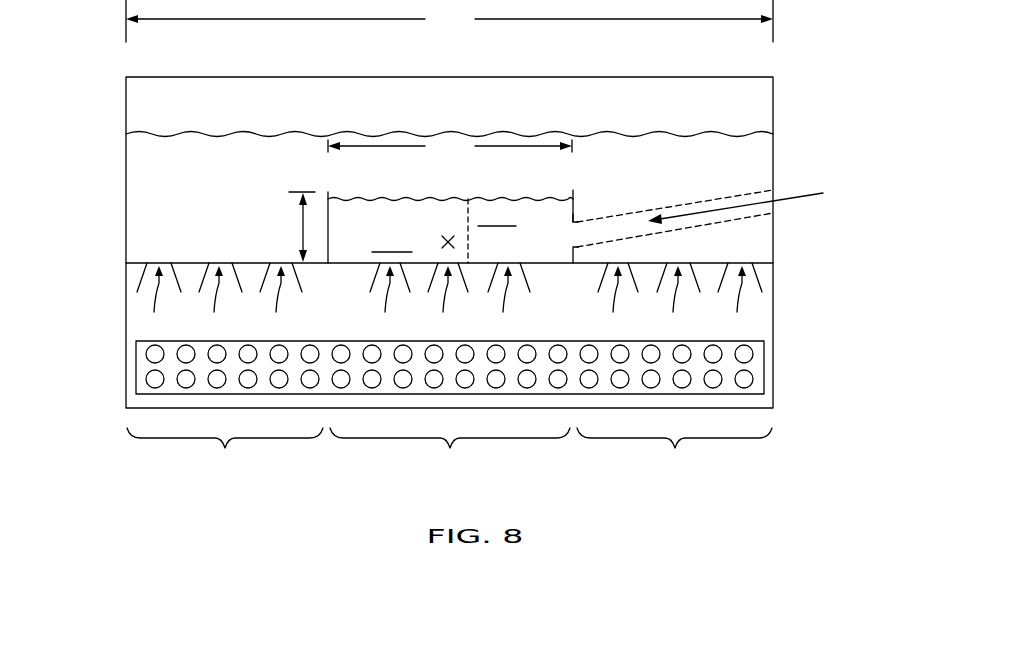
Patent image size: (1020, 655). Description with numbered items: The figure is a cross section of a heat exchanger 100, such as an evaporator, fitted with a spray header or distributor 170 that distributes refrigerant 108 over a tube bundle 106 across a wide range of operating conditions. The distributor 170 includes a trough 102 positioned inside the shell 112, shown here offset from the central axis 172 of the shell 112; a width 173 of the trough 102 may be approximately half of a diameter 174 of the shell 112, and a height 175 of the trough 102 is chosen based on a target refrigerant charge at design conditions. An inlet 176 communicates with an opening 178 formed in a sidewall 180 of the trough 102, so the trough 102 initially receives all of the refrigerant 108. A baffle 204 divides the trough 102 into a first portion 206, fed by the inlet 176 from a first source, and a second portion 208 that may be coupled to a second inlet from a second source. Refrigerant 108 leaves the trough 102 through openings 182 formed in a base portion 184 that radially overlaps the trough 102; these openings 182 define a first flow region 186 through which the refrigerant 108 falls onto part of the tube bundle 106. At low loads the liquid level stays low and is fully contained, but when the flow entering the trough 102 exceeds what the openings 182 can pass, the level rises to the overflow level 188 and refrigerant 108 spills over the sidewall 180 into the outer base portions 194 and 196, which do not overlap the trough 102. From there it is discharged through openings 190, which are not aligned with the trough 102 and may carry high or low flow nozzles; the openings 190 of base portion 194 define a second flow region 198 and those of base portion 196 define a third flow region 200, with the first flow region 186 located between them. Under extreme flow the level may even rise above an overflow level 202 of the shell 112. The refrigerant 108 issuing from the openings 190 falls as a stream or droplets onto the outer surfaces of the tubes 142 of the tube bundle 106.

The heat exchanger 100 is at (419, 237).
The trough 102 is at (576, 209).
The tube bundle 106 is at (419, 375).
The refrigerant 108 is at (823, 193).
The shell 112 is at (123, 192).
The tubes 142 is at (150, 353).
The distributor 170 is at (449, 108).
The central axis 172 is at (452, 238).
The width 173 is at (450, 146).
The diameter 174 is at (449, 21).
The height 175 is at (297, 198).
The inlet 176 is at (663, 203).
The opening 178 is at (572, 234).
The sidewall 180 is at (571, 217).
The openings 182 is at (447, 301).
The base portion 184 is at (352, 262).
The first flow region 186 is at (450, 453).
The overflow level 188 is at (352, 199).
The openings 190 is at (448, 301).
The base portion 194 is at (174, 260).
The base portion 196 is at (652, 262).
The second flow region 198 is at (225, 453).
The third flow region 200 is at (674, 453).
The overflow level 202 is at (170, 132).
The baffle 204 is at (467, 212).
The first portion 206 is at (497, 217).
The second portion 208 is at (392, 243).